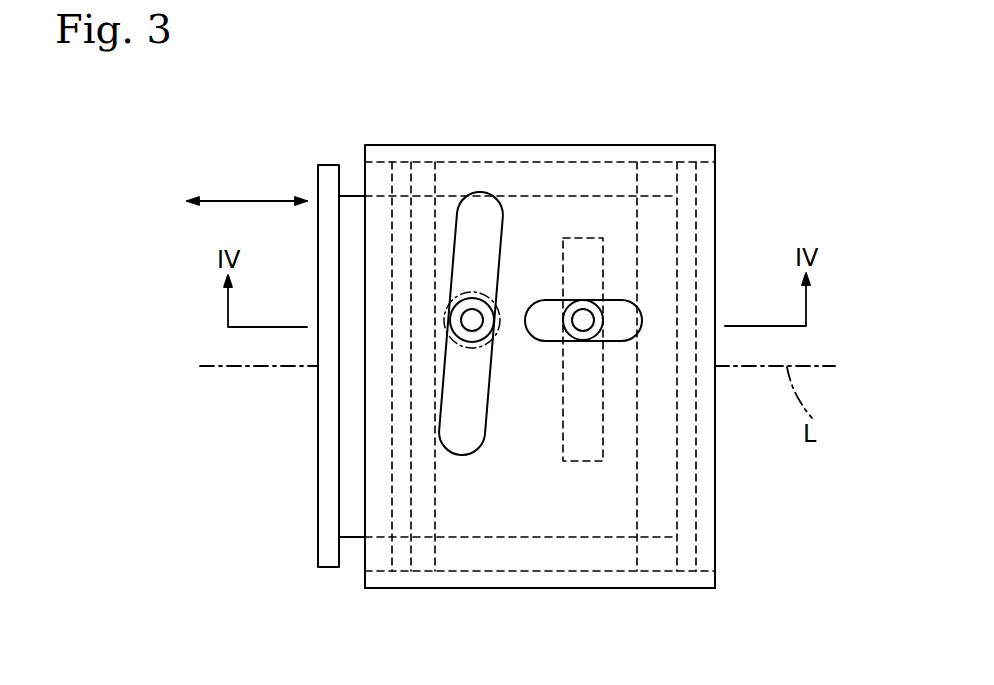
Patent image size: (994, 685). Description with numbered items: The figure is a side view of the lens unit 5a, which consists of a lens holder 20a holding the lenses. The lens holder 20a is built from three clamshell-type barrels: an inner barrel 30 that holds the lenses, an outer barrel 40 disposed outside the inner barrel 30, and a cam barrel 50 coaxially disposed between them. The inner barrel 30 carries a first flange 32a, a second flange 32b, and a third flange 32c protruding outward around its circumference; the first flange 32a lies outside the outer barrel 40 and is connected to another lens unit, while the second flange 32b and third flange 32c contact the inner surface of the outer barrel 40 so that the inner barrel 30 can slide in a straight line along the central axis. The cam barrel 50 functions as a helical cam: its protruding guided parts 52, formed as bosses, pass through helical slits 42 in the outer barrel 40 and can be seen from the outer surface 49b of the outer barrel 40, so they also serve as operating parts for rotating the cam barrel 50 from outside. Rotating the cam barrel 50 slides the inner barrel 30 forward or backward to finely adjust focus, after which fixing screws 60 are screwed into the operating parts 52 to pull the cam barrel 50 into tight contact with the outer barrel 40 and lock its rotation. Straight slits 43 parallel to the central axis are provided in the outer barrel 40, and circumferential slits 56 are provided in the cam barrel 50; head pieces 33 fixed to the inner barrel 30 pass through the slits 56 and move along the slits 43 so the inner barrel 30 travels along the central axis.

The lens unit 5a is at (664, 138).
The lens holder 20a is at (385, 596).
The inner barrel 30 is at (352, 195).
The first flange 32a is at (328, 165).
The second flange 32b is at (405, 165).
The third flange 32c is at (690, 162).
The head piece 33 is at (583, 333).
The outer barrel 40 is at (510, 145).
The helical slit 42 is at (485, 248).
The slit parallel to the central axis 43 is at (540, 303).
The outer surface of the outer barrel 49b is at (487, 522).
The cam barrel 50 is at (585, 162).
The protruding guided part 52 is at (481, 333).
The slit 56 is at (565, 432).
The fixing screw 60 is at (456, 350).